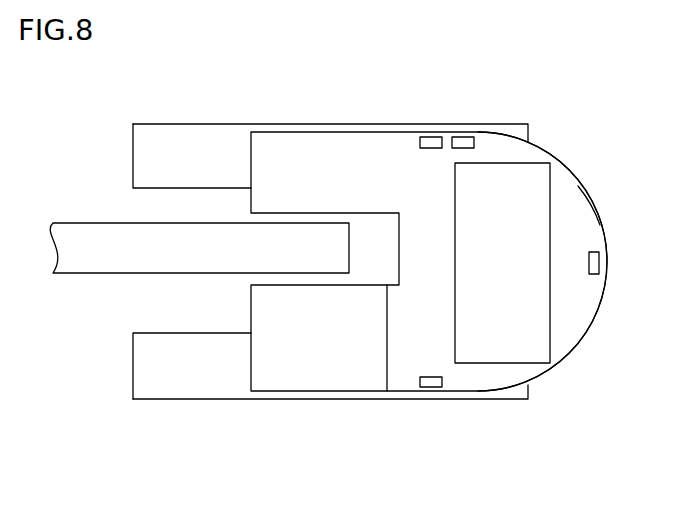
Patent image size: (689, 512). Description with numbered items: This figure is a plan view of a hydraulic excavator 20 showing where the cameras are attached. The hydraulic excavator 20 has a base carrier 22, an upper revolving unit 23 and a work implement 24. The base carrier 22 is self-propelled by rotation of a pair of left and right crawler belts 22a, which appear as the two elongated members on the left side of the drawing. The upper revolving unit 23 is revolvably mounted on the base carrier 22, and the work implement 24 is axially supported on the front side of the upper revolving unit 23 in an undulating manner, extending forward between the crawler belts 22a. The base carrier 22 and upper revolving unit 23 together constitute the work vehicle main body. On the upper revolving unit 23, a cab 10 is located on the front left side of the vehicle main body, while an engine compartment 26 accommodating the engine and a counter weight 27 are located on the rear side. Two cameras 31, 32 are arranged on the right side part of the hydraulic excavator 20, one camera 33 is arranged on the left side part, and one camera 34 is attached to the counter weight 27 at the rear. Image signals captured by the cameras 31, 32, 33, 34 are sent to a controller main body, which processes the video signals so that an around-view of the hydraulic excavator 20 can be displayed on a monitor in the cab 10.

The cab 10 is at (323, 401).
The hydraulic excavator 20 is at (396, 254).
The base carrier 22 is at (330, 277).
The crawler belts 22a is at (195, 150).
The upper revolving unit 23 is at (553, 140).
The work implement 24 is at (85, 196).
The engine compartment 26 is at (532, 307).
The counter weight 27 is at (582, 210).
The camera 31 is at (431, 140).
The camera 32 is at (463, 142).
The camera 33 is at (431, 388).
The camera 34 is at (600, 262).